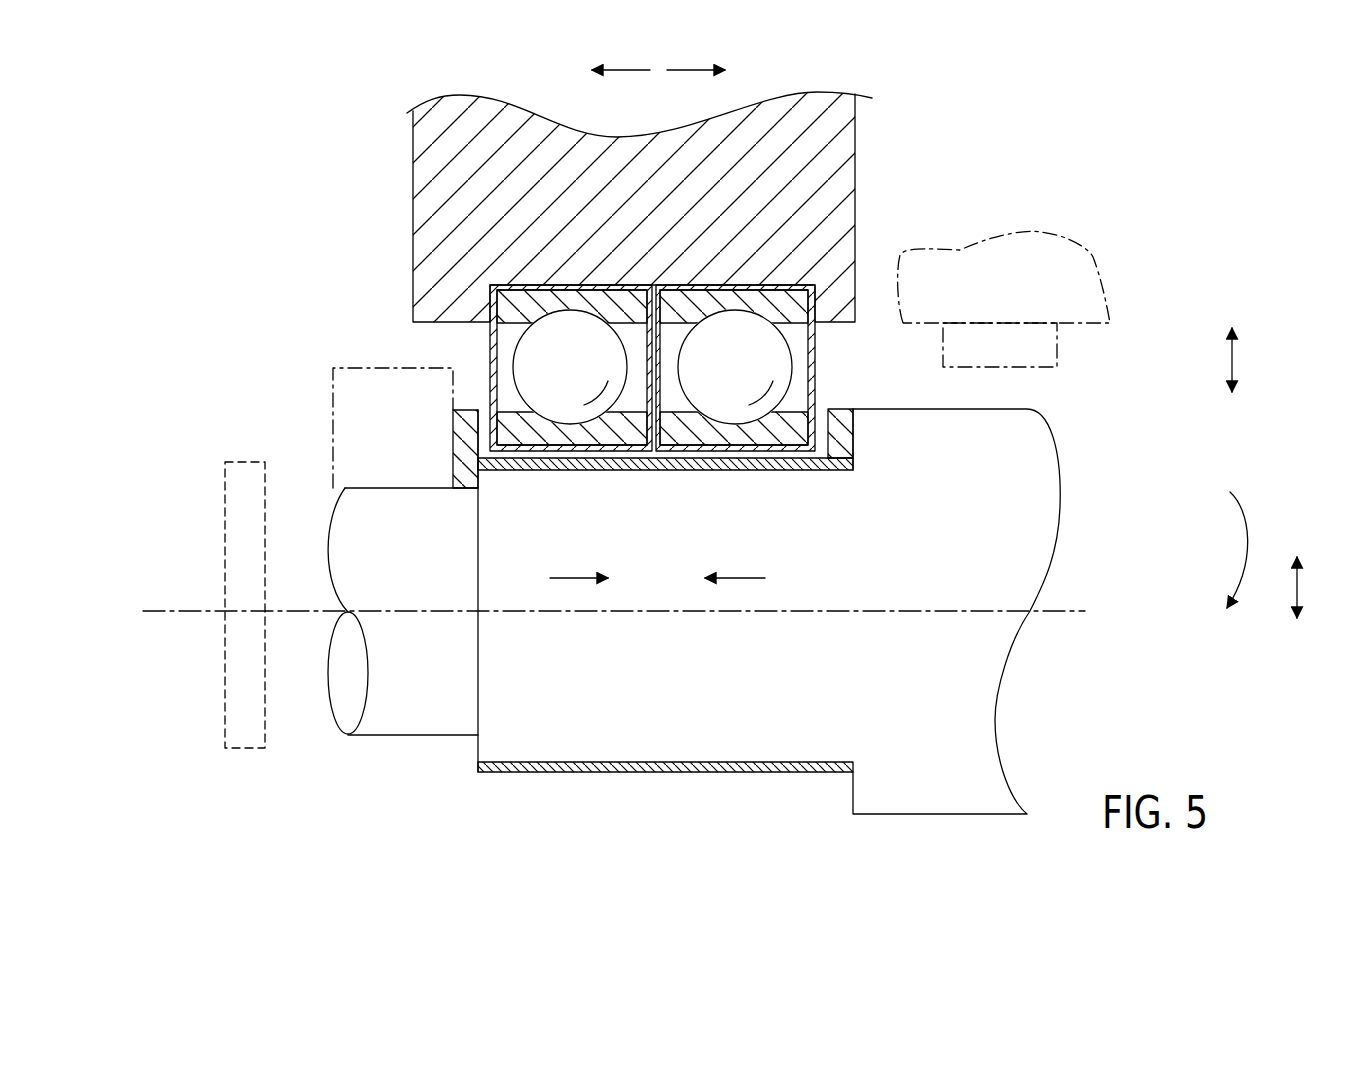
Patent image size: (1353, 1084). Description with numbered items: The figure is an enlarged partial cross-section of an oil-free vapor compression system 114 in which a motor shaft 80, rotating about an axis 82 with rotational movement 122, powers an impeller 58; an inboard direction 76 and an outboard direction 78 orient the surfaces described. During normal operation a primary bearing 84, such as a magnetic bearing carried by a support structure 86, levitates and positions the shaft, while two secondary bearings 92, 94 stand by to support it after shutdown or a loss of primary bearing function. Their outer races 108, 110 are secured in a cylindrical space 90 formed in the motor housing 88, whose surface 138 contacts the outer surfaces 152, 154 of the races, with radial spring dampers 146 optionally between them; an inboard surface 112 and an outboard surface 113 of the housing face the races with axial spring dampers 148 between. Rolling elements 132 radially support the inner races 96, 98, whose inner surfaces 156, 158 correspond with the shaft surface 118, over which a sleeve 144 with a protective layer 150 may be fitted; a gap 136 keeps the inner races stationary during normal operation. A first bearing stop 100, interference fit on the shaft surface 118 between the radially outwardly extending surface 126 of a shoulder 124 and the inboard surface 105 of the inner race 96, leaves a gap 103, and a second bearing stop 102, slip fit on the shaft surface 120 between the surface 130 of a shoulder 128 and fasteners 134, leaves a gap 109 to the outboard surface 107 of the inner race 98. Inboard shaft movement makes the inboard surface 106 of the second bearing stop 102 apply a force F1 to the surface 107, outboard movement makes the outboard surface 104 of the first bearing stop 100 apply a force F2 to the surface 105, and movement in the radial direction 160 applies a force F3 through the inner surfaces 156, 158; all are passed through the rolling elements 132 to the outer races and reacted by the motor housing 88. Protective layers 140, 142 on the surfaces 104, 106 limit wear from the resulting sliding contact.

The impeller 58 is at (247, 460).
The inboard direction 76 is at (690, 70).
The outboard direction 78 is at (627, 70).
The motor shaft 80 is at (960, 815).
The axis 82 is at (178, 610).
The primary bearing 84 is at (1057, 345).
The support structure 86 is at (1088, 298).
The motor housing 88 is at (843, 170).
The cylindrical space 90 is at (678, 304).
The secondary bearing 92 is at (790, 296).
The secondary bearing 94 is at (488, 380).
The inner race 96 is at (713, 430).
The inner race 98 is at (632, 430).
The first bearing stop 100 is at (838, 412).
The second bearing stop 102 is at (468, 455).
The gap 103 is at (832, 395).
The outboard surface 104 is at (820, 462).
The inboard surface 105 is at (823, 430).
The inboard surface 106 is at (480, 451).
The outboard surface 107 is at (488, 432).
The outer race 108 is at (780, 290).
The gap 109 is at (480, 408).
The outer race 110 is at (582, 300).
The inboard surface 112 is at (850, 268).
The outboard surface 113 is at (498, 280).
The oil-free vapor compression system 114 is at (983, 117).
The shaft surface 118 is at (785, 462).
The shaft surface 120 is at (420, 735).
The rotational movement 122 is at (1253, 545).
The shoulder 124 is at (853, 777).
The radially outwardly extending surface 126 is at (853, 792).
The shoulder 128 is at (480, 742).
The radially outwardly extending surface 130 is at (478, 760).
The rolling elements 132 is at (787, 350).
The fasteners 134 is at (333, 425).
The gap 136 is at (655, 452).
The surface 138 is at (510, 294).
The protective layer 140 is at (835, 422).
The protective layer 142 is at (472, 428).
The sleeve 144 is at (853, 458).
The radial spring dampers 146 is at (525, 287).
The axial spring dampers 148 is at (818, 286).
The protective layer 150 is at (552, 463).
The outer surface 152 is at (665, 285).
The outer surface 154 is at (612, 285).
The inner surface 156 is at (772, 443).
The inner surface 158 is at (575, 442).
The radial direction 160 is at (1234, 360).
The force F1 is at (570, 578).
The force F2 is at (742, 578).
The force F3 is at (1298, 586).